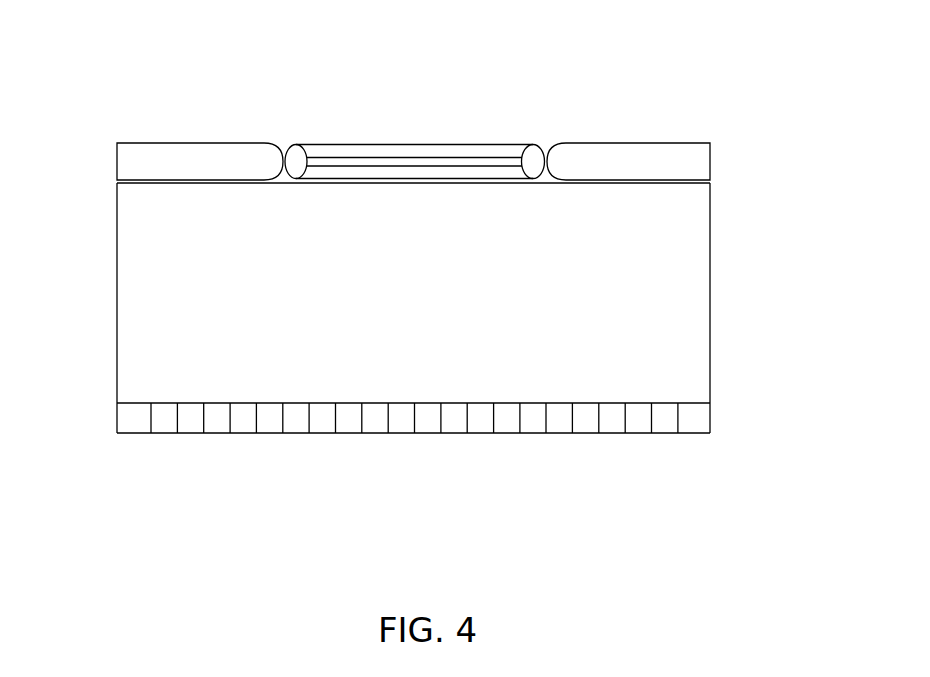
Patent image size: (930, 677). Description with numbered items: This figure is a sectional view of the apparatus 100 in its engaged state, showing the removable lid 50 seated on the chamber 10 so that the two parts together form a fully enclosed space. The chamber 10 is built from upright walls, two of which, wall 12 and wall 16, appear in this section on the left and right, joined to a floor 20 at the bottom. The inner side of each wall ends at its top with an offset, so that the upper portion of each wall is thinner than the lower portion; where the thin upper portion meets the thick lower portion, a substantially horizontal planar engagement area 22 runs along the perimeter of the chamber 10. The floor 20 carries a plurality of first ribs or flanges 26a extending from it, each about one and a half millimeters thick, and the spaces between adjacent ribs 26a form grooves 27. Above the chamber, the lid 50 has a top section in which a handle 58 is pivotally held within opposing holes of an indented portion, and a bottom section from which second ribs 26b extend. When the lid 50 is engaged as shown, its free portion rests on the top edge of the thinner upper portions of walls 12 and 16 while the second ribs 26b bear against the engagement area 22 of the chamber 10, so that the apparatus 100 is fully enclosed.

The apparatus 100 is at (712, 50).
The chamber 10 is at (97, 370).
The upright wall 12 is at (117, 265).
The upright wall 16 is at (710, 283).
The engagement area 22 is at (660, 185).
The floor 20 is at (642, 433).
The grooves 27 is at (562, 422).
The first ribs 26a is at (231, 418).
The second ribs 26b is at (588, 142).
The removable lid 50 is at (146, 126).
The handle 58 is at (292, 147).